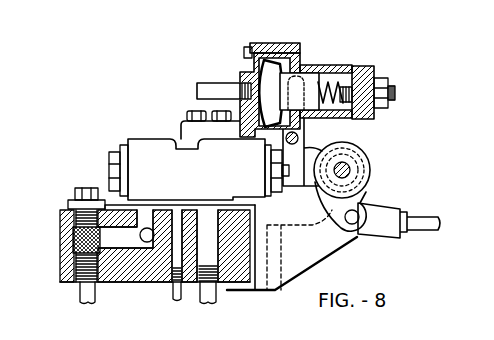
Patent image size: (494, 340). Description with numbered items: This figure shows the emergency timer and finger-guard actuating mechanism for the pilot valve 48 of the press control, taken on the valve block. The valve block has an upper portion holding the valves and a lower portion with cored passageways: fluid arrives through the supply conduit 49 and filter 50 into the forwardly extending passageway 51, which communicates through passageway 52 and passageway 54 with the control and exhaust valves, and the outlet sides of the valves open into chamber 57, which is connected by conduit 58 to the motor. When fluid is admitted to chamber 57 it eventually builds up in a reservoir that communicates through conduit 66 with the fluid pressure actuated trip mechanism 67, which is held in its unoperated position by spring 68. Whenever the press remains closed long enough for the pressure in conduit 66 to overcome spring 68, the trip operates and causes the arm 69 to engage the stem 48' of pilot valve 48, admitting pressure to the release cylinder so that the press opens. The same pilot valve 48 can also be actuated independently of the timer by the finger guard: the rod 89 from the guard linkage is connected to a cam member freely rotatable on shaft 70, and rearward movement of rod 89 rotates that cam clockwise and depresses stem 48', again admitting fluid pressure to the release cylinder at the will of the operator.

The pilot valve 48 is at (193, 160).
The stem 48' is at (287, 185).
The conduit 49 is at (82, 293).
The filter 50 is at (84, 240).
The forwardly extending passageway 51 is at (117, 240).
The passageway 52 is at (147, 242).
The passageway 54 is at (175, 292).
The chamber 57 is at (209, 246).
The conduit 58 is at (217, 300).
The conduit 66 is at (223, 66).
The fluid pressure actuated trip mechanism 67 is at (304, 63).
The spring 68 is at (334, 78).
The arm 69 is at (304, 150).
The shaft 70 is at (349, 170).
The rod 89 is at (422, 224).